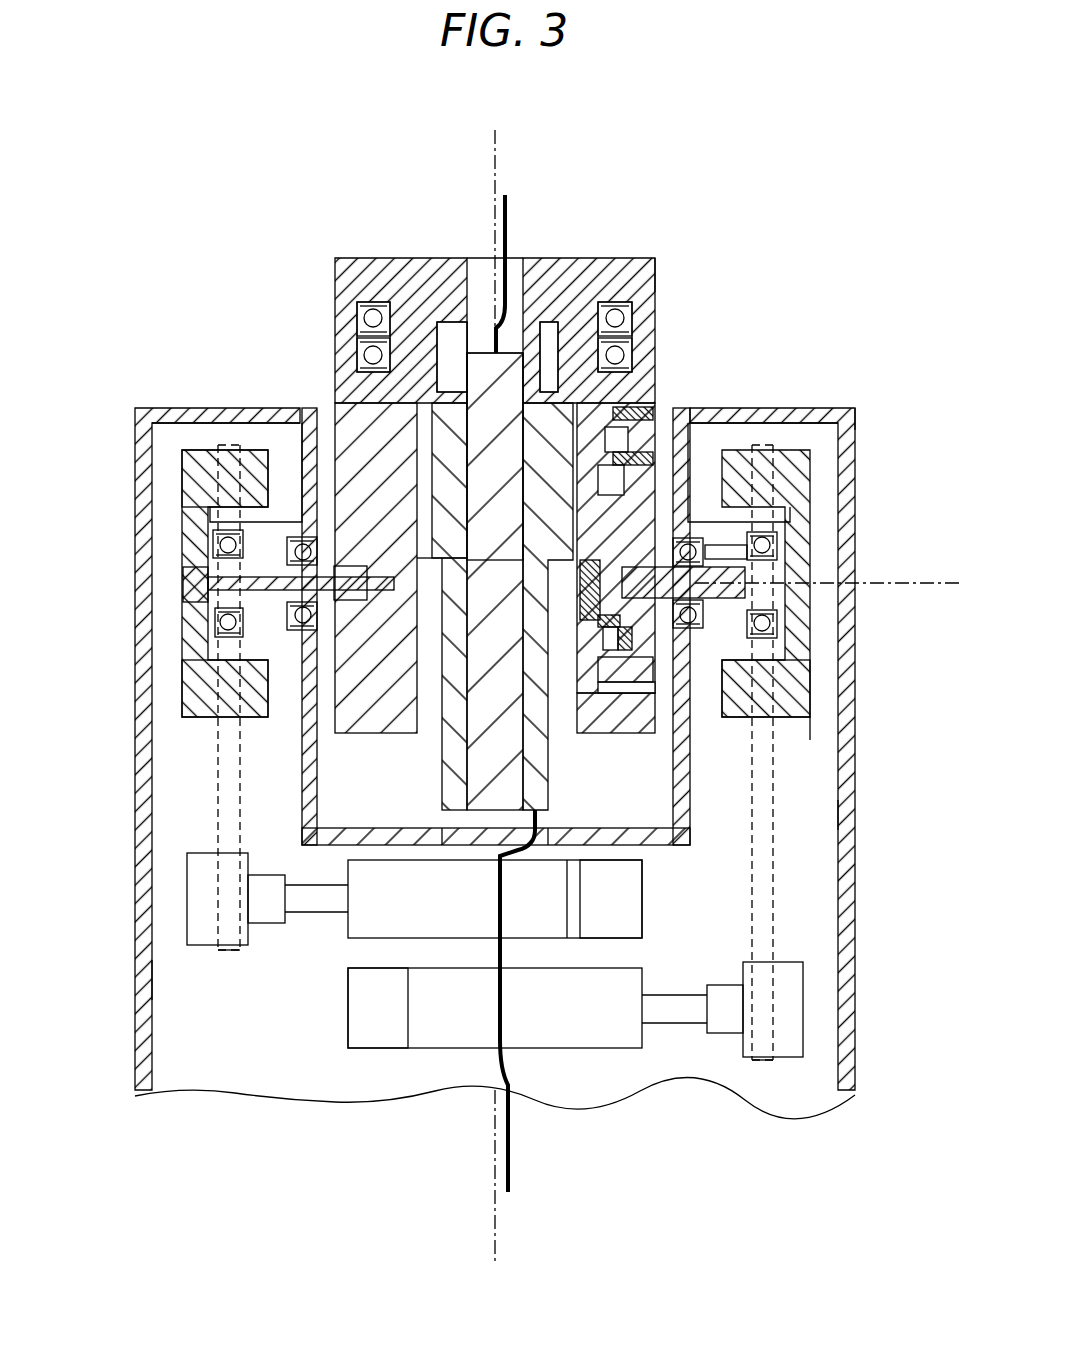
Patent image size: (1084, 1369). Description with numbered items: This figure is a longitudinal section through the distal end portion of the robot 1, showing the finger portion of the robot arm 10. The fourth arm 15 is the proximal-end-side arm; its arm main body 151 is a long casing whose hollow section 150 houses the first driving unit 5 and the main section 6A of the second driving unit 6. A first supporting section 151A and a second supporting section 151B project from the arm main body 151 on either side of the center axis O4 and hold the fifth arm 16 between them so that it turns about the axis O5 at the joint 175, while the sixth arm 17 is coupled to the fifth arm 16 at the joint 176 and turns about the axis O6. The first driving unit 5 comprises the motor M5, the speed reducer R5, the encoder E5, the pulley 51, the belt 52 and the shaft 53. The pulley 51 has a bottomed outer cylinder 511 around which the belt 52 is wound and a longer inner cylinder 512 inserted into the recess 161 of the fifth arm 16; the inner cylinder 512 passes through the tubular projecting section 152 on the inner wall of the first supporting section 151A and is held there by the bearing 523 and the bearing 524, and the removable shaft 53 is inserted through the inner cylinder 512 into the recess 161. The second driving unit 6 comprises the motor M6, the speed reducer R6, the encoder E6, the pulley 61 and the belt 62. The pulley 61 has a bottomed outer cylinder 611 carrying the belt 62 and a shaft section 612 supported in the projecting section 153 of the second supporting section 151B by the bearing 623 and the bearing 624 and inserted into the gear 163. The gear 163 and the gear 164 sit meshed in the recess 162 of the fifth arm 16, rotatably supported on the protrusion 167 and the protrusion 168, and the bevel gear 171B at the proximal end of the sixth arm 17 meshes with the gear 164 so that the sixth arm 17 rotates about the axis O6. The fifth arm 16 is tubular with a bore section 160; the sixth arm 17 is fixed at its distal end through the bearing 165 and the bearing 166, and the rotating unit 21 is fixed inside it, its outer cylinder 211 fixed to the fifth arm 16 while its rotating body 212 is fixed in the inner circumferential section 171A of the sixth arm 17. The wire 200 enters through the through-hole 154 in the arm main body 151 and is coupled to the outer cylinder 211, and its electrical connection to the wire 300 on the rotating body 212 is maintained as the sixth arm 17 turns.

The robot 1 is at (884, 164).
The first driving unit 5 is at (278, 945).
The second driving unit 6 is at (682, 1062).
The main section 6A is at (848, 815).
The robot arm 10 is at (855, 940).
The fourth arm 15 is at (150, 841).
The fifth arm 16 is at (363, 433).
The sixth arm 17 is at (386, 268).
The rotating unit 21 is at (543, 790).
The pulley 51 is at (195, 475).
The belt 52 is at (215, 795).
The shaft 53 is at (197, 583).
The pulley 61 is at (797, 685).
The belt 62 is at (777, 835).
The hollow section 150 is at (185, 1035).
The arm main body 151 is at (152, 978).
The first supporting section 151A is at (170, 413).
The second supporting section 151B is at (843, 417).
The projecting section 152 is at (297, 470).
The projecting section 153 is at (728, 540).
The through-hole 154 is at (470, 826).
The bore section 160 is at (563, 692).
The recess 161 is at (365, 575).
The recess 162 is at (655, 683).
The gear 163 is at (620, 670).
The gear 164 is at (646, 398).
The bearing 165 is at (368, 308).
The bearing 166 is at (360, 347).
The protrusion 167 is at (690, 673).
The protrusion 168 is at (655, 430).
The inner circumferential section 171A is at (478, 275).
The bevel gear 171B is at (350, 403).
The joint 175 is at (808, 737).
The joint 176 is at (707, 278).
The wire 200 is at (510, 1175).
The outer cylinder 211 is at (417, 420).
The rotating body 212 is at (508, 372).
The wire 300 is at (511, 217).
The outer cylinder 511 is at (182, 470).
The inner cylinder 512 is at (213, 477).
The bearing 523 is at (177, 628).
The bearing 524 is at (292, 630).
The outer cylinder 611 is at (800, 473).
The shaft section 612 is at (720, 573).
The bearing 623 is at (750, 637).
The bearing 624 is at (700, 520).
The encoder E5 is at (625, 915).
The encoder E6 is at (380, 1015).
The motor M5 is at (375, 910).
The motor M6 is at (445, 1015).
The speed reducer R5 is at (200, 907).
The speed reducer R6 is at (775, 1040).
The center axis O4 is at (497, 1238).
The axis O5 is at (942, 593).
The axis O6 is at (497, 150).